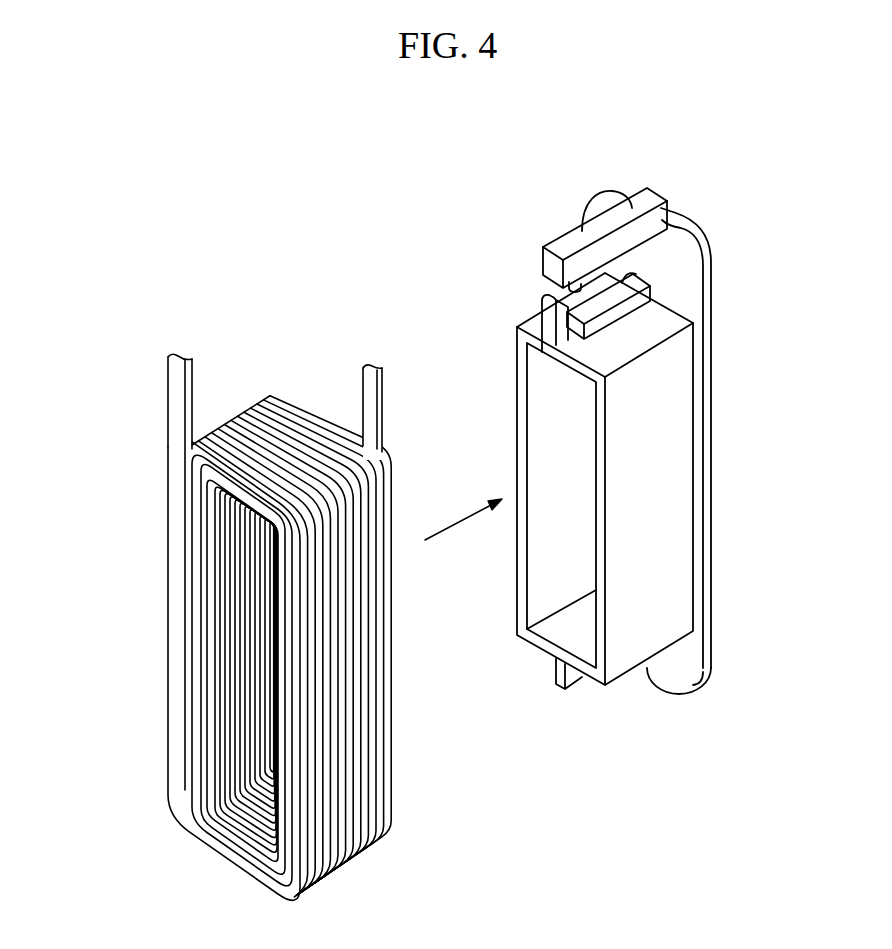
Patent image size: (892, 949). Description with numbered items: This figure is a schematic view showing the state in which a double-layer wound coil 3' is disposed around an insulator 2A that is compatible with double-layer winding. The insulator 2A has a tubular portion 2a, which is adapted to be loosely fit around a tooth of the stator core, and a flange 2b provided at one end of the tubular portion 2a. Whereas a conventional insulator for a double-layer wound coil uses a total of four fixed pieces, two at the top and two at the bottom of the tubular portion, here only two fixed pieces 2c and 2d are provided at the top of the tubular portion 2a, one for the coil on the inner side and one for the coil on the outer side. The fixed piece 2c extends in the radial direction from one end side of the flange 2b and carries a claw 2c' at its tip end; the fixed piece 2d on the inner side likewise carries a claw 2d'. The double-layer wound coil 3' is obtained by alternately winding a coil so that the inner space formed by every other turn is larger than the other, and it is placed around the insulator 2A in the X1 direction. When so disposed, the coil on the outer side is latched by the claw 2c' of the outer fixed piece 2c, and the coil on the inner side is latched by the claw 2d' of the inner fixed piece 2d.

The double-layer wound coil 3' is at (243, 627).
The X1 direction X1 is at (463, 516).
The insulator 2A is at (633, 478).
The tubular portion 2a is at (653, 602).
The flange 2b is at (687, 663).
The fixed piece 2c is at (605, 216).
The claw 2c' is at (581, 236).
The fixed piece 2d is at (656, 285).
The claw 2d' is at (527, 305).